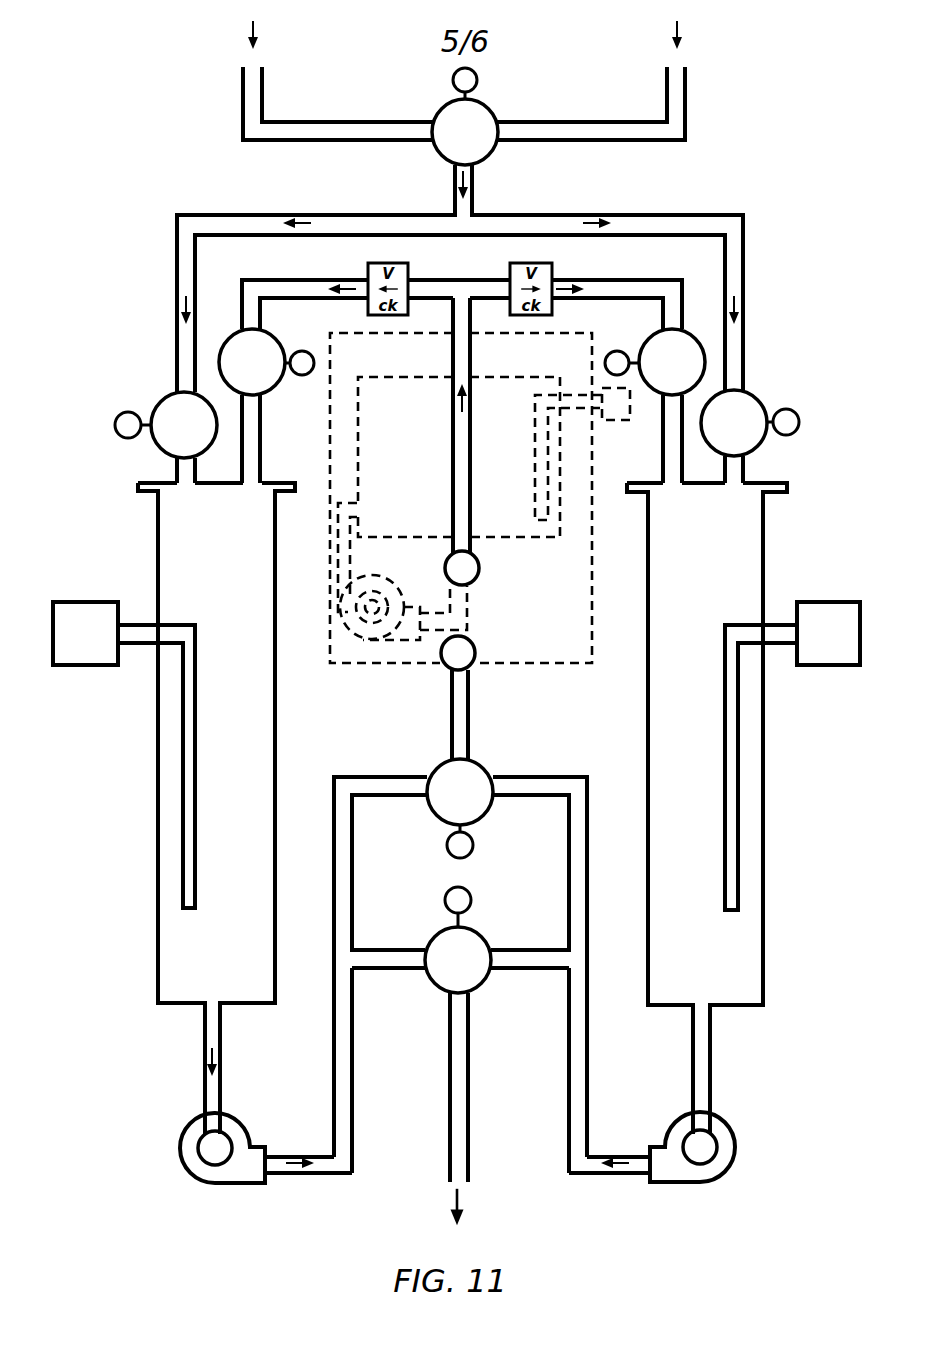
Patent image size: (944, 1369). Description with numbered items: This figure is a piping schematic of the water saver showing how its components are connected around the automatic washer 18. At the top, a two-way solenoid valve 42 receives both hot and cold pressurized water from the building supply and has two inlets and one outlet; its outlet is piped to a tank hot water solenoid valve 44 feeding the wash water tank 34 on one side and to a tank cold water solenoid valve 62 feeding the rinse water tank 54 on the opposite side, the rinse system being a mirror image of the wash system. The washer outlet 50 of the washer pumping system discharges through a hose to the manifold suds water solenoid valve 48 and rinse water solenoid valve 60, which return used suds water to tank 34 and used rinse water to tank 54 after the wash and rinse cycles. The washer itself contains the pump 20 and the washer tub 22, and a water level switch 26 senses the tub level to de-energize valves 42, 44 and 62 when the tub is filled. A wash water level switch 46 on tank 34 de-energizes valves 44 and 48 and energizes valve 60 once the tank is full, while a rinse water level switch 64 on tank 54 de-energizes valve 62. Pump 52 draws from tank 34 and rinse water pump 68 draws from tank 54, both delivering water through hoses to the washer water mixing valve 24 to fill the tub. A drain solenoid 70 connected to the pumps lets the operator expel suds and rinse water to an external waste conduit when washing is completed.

The automatic washer 18 is at (594, 607).
The pump 20 is at (397, 668).
The washer tub 22 is at (338, 512).
The water mixing valve 24 is at (485, 763).
The water level switch 26 is at (630, 410).
The wash water tank 34 is at (157, 857).
The two-way solenoid valve 42 is at (489, 158).
The tank hot water solenoid valve 44 is at (160, 400).
The wash water level switch 46 is at (112, 600).
The suds water solenoid valve 48 is at (270, 385).
The washer outlet 50 is at (479, 571).
The pump 52 is at (215, 1185).
The rinse water tank 54 is at (765, 860).
The rinse water solenoid valve 60 is at (658, 336).
The tank cold water solenoid valve 62 is at (760, 398).
The rinse water level switch 64 is at (850, 602).
The rinse water pump 68 is at (695, 1183).
The drain solenoid 70 is at (447, 990).